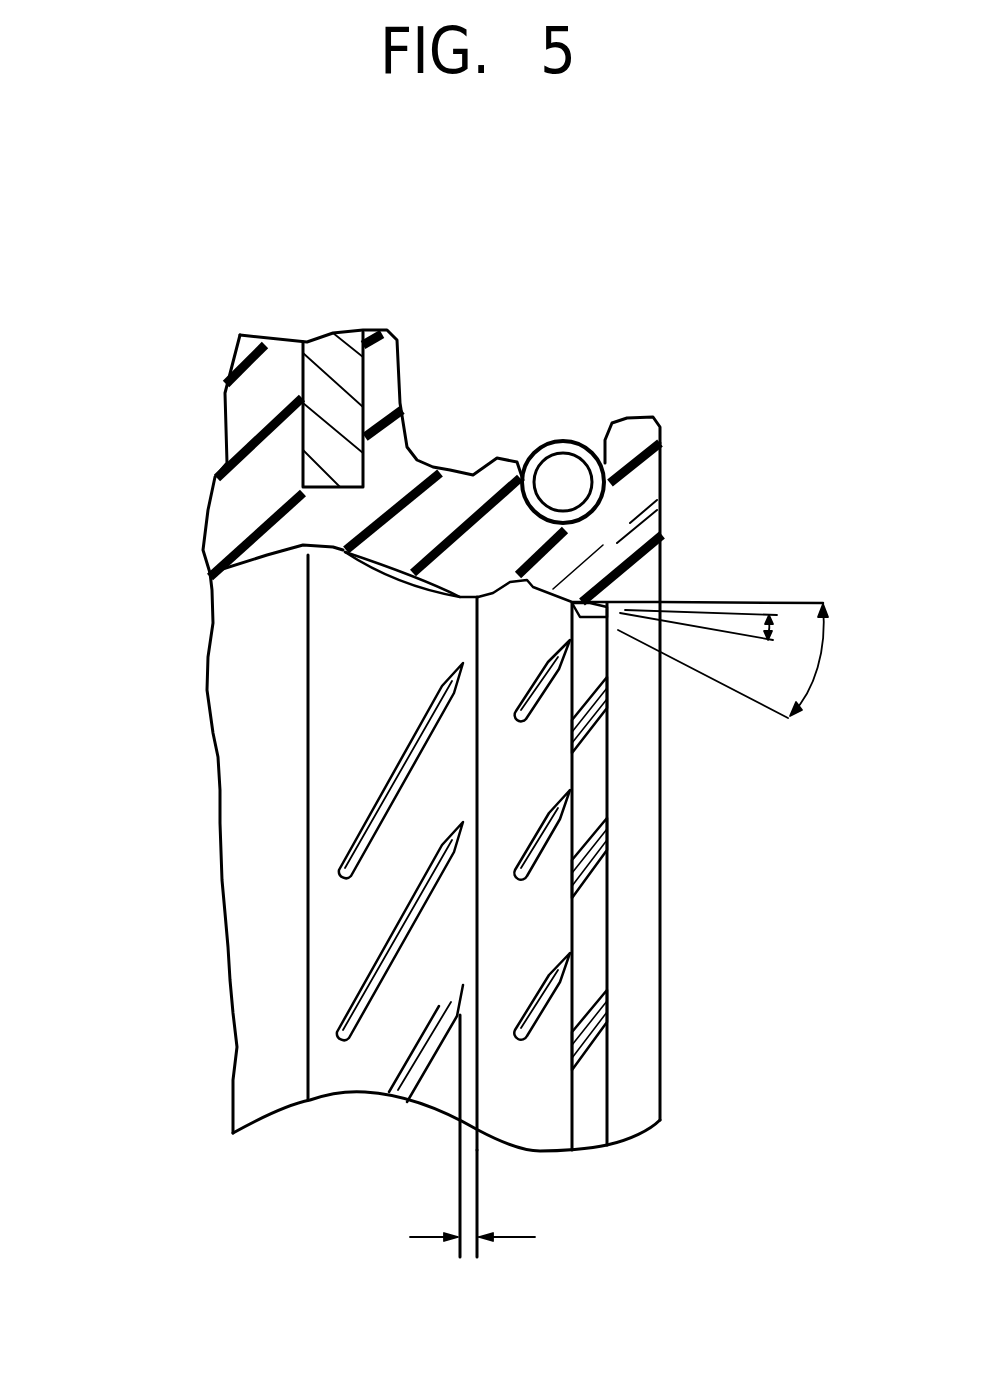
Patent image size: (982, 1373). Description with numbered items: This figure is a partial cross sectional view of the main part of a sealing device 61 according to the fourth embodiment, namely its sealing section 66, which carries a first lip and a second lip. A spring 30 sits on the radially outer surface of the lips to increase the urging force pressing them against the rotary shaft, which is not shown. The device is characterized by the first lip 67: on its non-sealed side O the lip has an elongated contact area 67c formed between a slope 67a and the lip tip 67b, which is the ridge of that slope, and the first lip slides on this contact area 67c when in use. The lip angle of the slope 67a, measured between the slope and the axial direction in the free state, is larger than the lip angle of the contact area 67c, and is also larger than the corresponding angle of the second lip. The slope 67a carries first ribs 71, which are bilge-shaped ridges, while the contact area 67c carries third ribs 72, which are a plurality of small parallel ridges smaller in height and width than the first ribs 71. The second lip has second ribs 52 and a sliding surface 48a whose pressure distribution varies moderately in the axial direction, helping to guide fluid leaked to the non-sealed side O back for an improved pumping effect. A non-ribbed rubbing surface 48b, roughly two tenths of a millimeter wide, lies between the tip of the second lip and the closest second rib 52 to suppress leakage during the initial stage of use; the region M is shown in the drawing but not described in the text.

The sealing device 61 is at (532, 264).
The sealing section 66 is at (450, 457).
The spring 30 is at (584, 440).
The first lip 67 is at (620, 543).
The sliding surface 48a is at (467, 600).
The second ribs 52 is at (395, 755).
The non-sealed side O is at (97, 882).
The middle / medium side M is at (842, 881).
The slope 67a is at (540, 770).
The first ribs 71 is at (552, 845).
The third ribs 72 is at (585, 880).
The contact area 67c is at (595, 958).
The lip tip 67b is at (607, 1062).
The rubbing surface 48b is at (477, 1240).